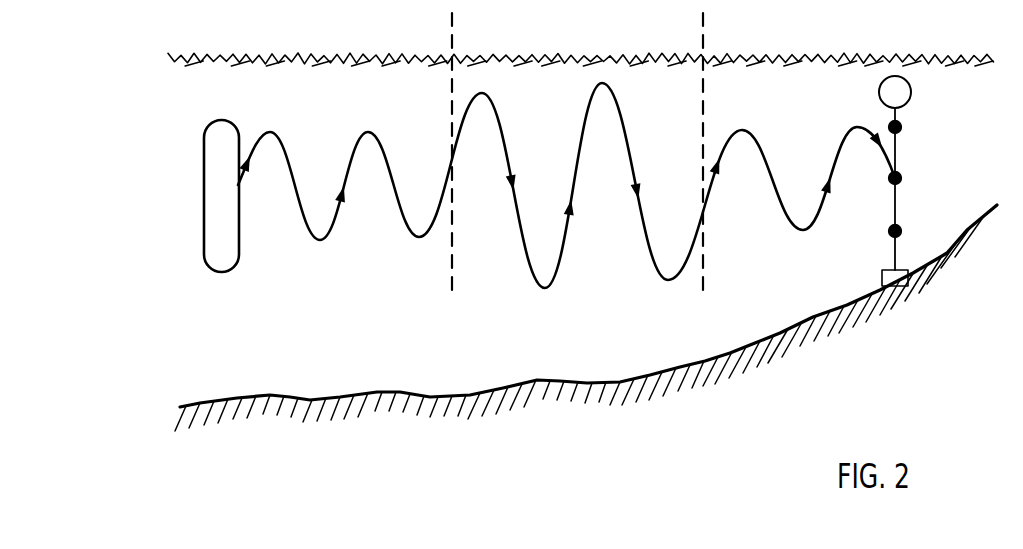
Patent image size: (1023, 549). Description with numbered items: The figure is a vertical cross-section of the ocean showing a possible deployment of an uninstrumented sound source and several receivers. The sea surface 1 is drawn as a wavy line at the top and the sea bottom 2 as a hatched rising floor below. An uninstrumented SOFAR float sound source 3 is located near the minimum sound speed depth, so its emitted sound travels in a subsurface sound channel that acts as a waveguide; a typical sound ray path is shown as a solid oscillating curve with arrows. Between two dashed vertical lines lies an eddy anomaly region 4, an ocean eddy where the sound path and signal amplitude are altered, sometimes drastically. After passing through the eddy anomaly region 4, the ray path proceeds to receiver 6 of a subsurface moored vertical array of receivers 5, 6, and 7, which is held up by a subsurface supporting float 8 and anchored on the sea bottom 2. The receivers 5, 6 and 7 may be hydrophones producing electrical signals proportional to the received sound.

The sea surface 1 is at (152, 72).
The sea bottom 2 is at (586, 318).
The uninstrumented SOFAR float sound source 3 is at (208, 196).
The eddy anomaly region 4 is at (699, 32).
The receiver 5 is at (885, 197).
The receiver 6 is at (909, 175).
The receiver 7 is at (907, 125).
The subsurface supporting float 8 is at (883, 88).